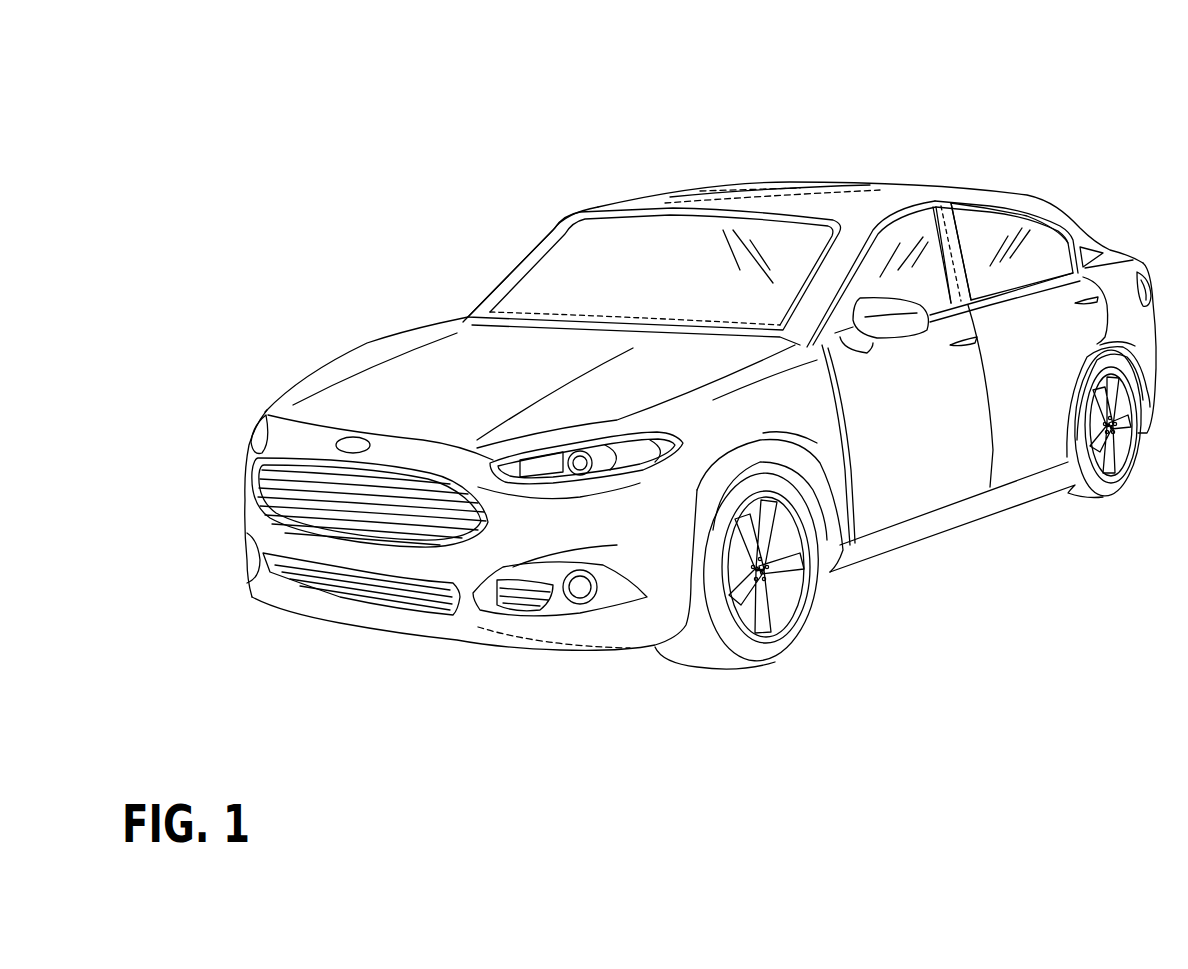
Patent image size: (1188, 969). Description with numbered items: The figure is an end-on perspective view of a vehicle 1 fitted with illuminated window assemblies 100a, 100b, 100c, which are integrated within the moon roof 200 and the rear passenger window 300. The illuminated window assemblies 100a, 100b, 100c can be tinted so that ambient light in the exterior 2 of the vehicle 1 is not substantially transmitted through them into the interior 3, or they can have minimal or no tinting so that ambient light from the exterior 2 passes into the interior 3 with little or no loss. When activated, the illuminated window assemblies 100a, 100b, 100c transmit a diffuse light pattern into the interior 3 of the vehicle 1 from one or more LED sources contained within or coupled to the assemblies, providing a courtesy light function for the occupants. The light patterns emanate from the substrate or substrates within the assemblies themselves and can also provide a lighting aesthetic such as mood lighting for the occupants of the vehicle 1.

The vehicle 1 is at (362, 338).
The exterior 2 is at (477, 257).
The interior 3 is at (937, 291).
The illuminated window assembly 100a is at (640, 197).
The illuminated window assembly 100b is at (812, 179).
The illuminated window assembly 100c is at (875, 178).
The moon roof 200 is at (795, 178).
The rear passenger window 300 is at (1060, 227).